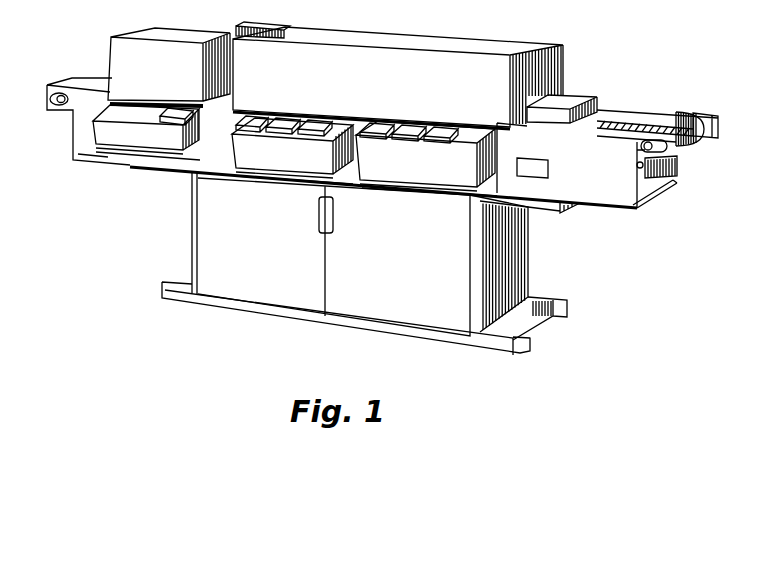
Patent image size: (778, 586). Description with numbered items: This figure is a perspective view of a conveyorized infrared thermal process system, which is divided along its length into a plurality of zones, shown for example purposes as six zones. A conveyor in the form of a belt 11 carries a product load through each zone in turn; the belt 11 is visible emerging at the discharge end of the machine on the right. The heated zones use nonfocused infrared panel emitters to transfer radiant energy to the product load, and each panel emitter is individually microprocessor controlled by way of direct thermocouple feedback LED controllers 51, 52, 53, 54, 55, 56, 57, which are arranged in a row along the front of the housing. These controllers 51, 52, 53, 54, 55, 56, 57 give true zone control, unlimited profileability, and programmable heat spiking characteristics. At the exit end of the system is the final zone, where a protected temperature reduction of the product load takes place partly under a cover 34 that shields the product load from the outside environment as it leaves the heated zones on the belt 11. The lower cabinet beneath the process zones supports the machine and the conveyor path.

The belt 11 is at (650, 108).
The cover 34 is at (575, 100).
The LED controller 51 is at (183, 105).
The LED controller 52 is at (268, 112).
The LED controller 53 is at (300, 114).
The LED controller 54 is at (334, 116).
The LED controller 55 is at (388, 120).
The LED controller 56 is at (422, 121).
The LED controller 57 is at (458, 123).